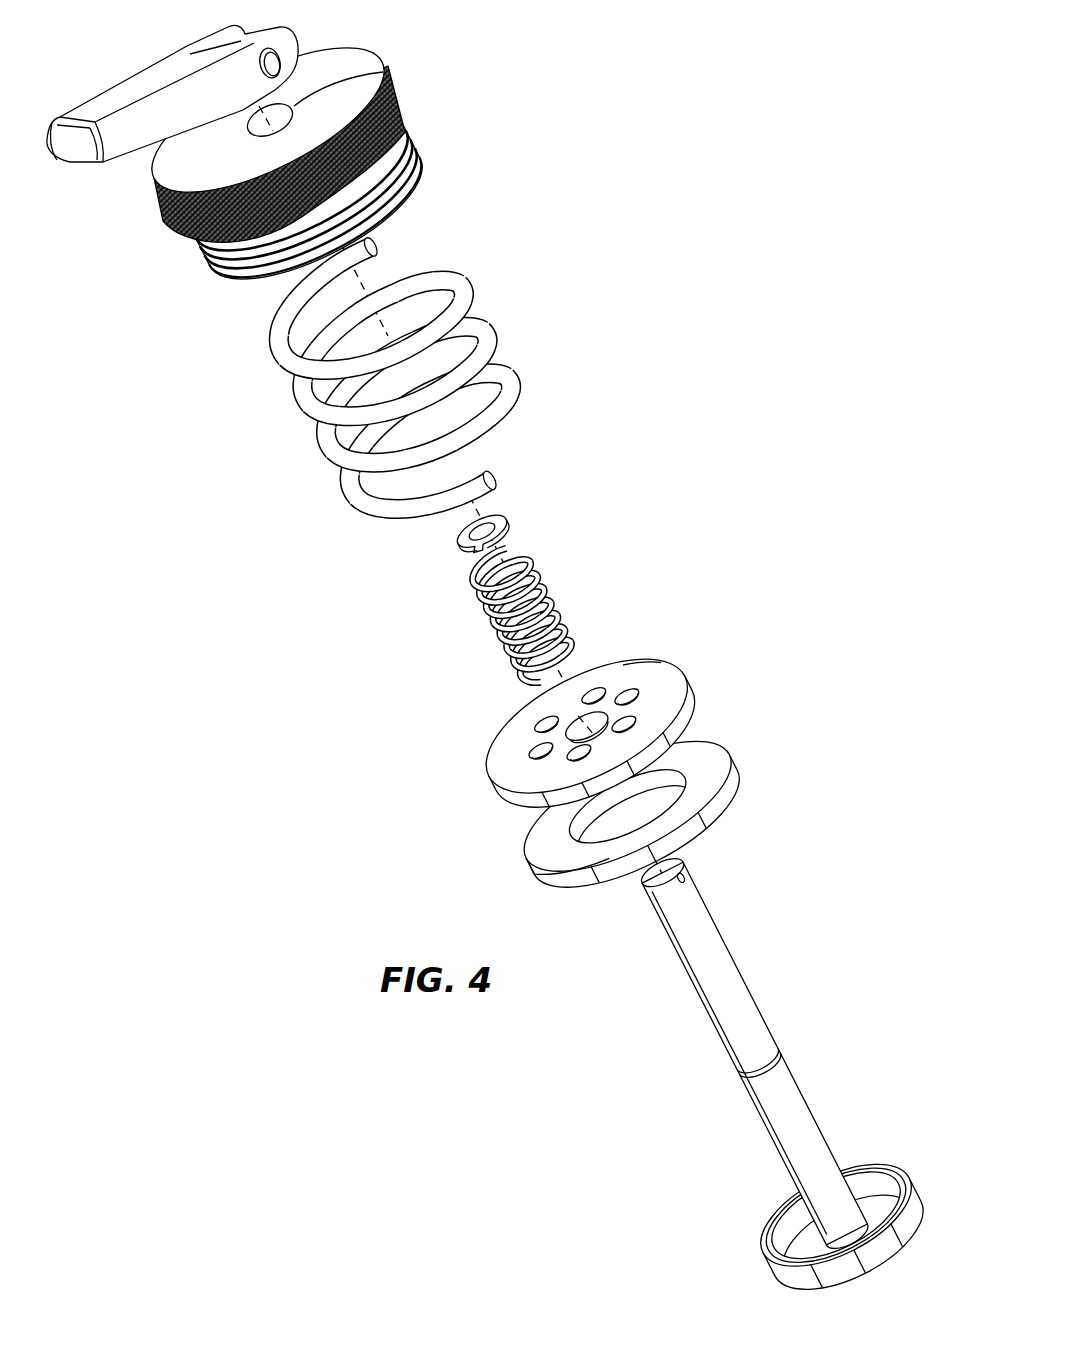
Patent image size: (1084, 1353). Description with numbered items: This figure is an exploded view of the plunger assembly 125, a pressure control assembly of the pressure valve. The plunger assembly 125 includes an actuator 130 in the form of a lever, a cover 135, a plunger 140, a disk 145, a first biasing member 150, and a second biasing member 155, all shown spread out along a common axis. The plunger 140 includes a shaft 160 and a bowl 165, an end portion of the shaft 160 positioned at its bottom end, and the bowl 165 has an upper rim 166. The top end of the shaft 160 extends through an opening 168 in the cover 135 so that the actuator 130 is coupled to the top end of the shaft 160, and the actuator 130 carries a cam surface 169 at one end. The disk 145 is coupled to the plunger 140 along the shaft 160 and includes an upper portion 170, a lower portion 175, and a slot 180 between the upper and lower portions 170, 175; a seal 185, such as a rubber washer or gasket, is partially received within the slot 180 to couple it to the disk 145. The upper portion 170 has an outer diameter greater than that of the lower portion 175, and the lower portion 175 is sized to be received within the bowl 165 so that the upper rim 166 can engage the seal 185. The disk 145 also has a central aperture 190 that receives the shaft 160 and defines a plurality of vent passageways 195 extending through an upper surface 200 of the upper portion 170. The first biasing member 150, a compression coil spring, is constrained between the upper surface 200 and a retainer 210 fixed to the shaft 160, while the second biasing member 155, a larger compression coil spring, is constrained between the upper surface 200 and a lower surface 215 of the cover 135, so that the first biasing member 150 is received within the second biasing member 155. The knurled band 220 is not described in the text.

The plunger assembly 125 is at (500, 655).
The actuator 130 is at (206, 81).
The cover 135 is at (317, 159).
The plunger 140 is at (797, 1082).
The disk 145 is at (611, 741).
The first biasing member 150 is at (546, 582).
The second biasing member 155 is at (485, 328).
The shaft 160 is at (712, 960).
The bowl 165 is at (851, 1198).
The upper rim 166 is at (873, 1167).
The opening 168 is at (384, 73).
The cam surface 169 is at (297, 43).
The upper portion 170 is at (586, 702).
The lower portion 175 is at (540, 818).
The slot 180 is at (520, 815).
The seal 185 is at (722, 800).
The central aperture 190 is at (590, 720).
The vent passageways 195 is at (537, 717).
The upper surface 200 is at (653, 680).
The retainer 210 is at (450, 534).
The lower surface 215 is at (403, 203).
The knurled band 220 is at (405, 112).